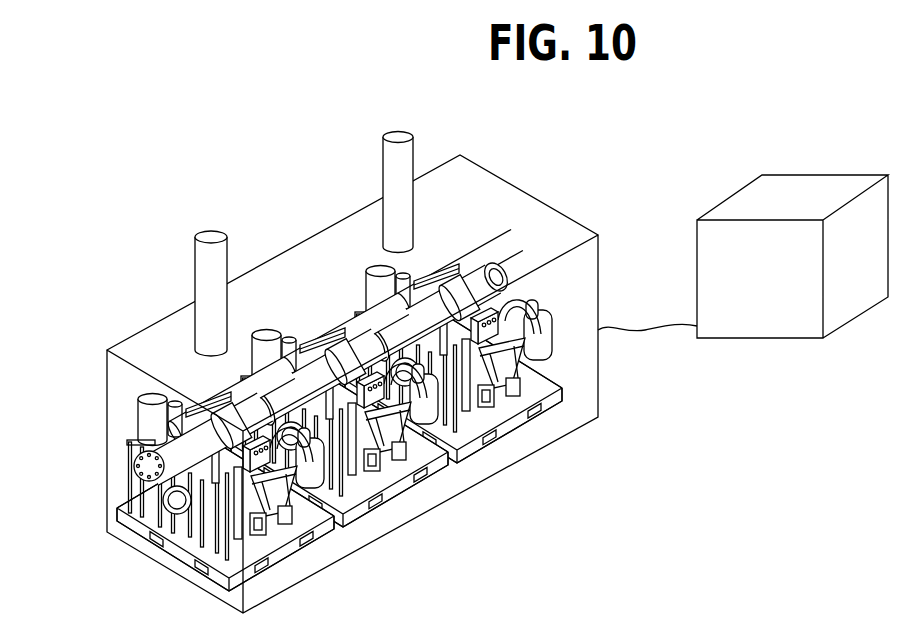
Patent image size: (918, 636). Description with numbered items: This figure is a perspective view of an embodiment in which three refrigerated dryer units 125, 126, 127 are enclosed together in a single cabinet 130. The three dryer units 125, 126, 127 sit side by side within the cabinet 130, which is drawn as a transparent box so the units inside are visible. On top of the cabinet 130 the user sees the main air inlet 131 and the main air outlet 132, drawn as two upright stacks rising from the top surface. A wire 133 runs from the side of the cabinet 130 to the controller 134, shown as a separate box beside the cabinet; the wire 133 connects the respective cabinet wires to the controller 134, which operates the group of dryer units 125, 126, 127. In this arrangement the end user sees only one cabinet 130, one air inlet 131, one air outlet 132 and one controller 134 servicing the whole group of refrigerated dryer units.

The refrigerated dryer unit 125 is at (272, 560).
The refrigerated dryer unit 126 is at (400, 487).
The refrigerated dryer unit 127 is at (512, 420).
The single cabinet 130 is at (84, 445).
The main air inlet 131 is at (208, 238).
The main air outlet 132 is at (399, 133).
The wire 133 is at (620, 328).
The controller 134 is at (783, 294).